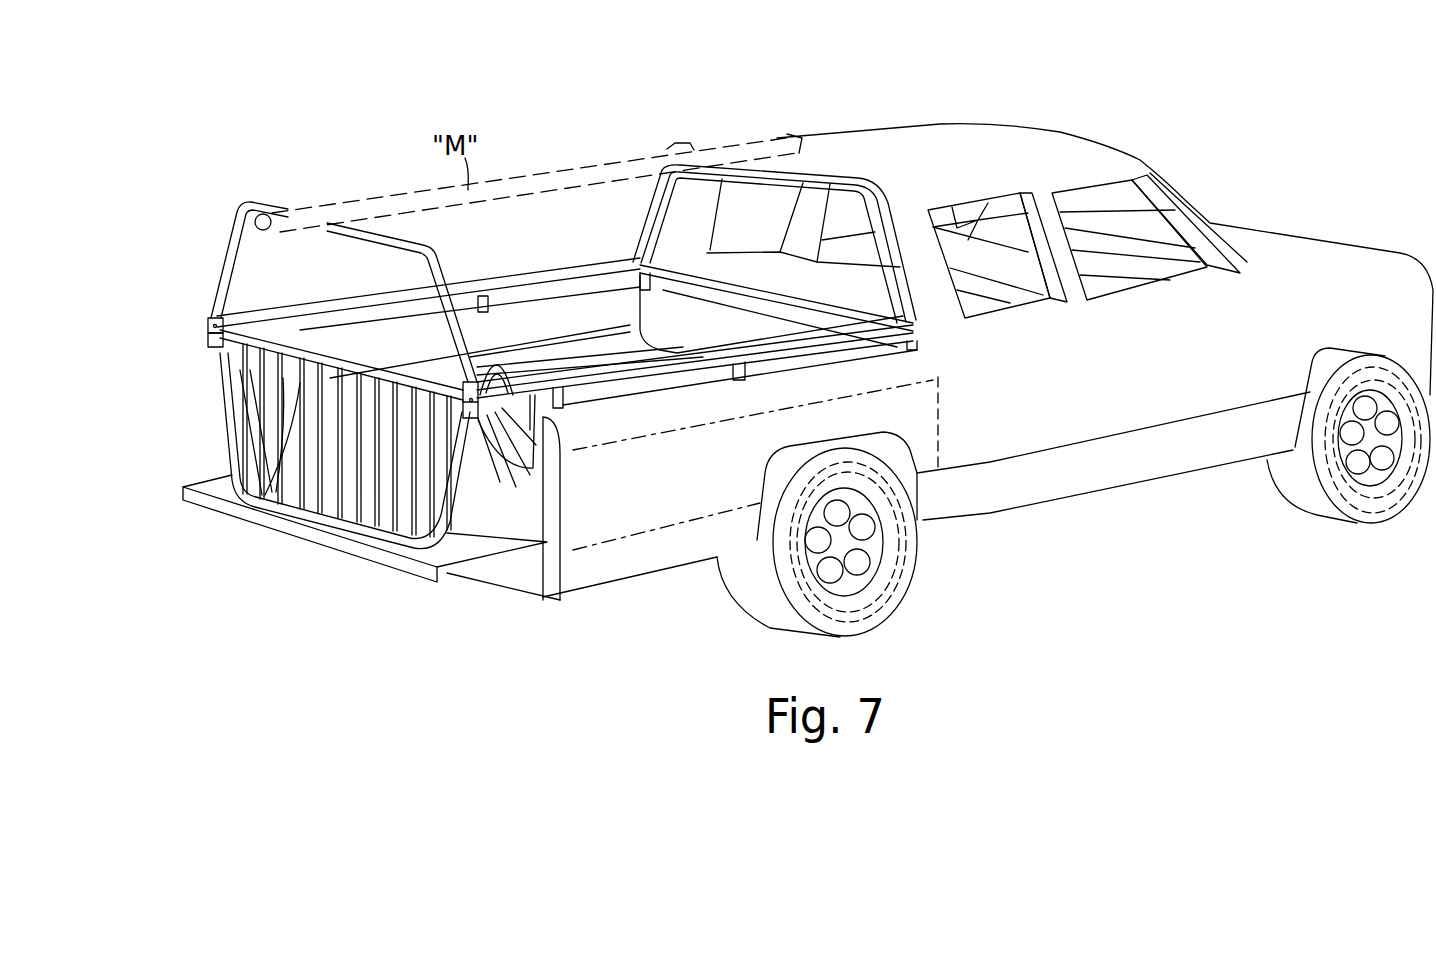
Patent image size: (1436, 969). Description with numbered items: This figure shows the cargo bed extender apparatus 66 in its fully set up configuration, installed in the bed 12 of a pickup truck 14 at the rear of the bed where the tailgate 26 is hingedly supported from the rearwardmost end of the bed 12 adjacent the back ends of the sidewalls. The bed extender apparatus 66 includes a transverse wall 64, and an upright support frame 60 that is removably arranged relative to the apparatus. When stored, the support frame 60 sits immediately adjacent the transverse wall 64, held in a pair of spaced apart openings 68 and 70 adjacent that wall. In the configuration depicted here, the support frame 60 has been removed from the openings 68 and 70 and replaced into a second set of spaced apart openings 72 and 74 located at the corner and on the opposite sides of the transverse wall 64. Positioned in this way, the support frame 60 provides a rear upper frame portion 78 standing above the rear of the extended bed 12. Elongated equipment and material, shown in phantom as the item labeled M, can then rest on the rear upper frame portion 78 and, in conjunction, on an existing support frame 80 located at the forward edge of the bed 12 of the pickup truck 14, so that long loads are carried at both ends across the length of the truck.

The bed 12 is at (582, 312).
The pickup truck 14 is at (935, 125).
The tailgate 26 is at (455, 574).
The upright support frame 60 is at (347, 224).
The transverse wall 64 is at (335, 518).
The bed extender apparatus 66 is at (222, 439).
The opening 68 is at (210, 346).
The opening 70 is at (477, 422).
The opening 72 is at (208, 320).
The opening 74 is at (460, 388).
The rear upper frame portion 78 is at (226, 263).
The existing support frame 80 is at (690, 148).